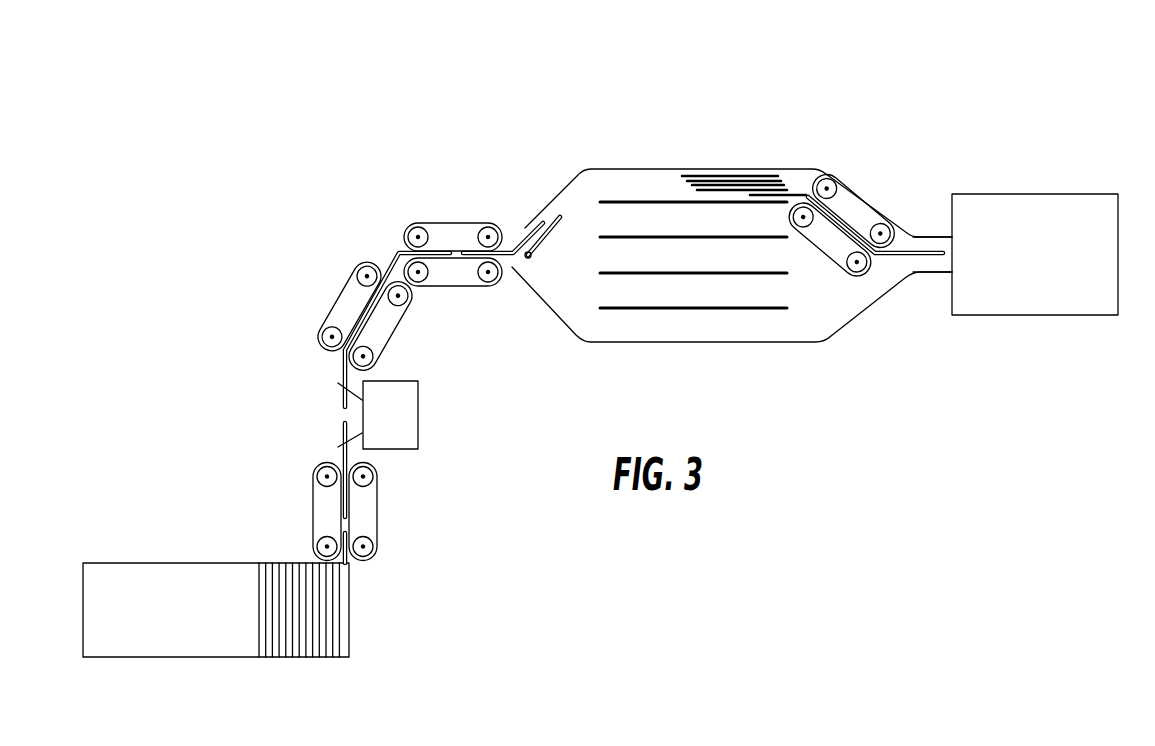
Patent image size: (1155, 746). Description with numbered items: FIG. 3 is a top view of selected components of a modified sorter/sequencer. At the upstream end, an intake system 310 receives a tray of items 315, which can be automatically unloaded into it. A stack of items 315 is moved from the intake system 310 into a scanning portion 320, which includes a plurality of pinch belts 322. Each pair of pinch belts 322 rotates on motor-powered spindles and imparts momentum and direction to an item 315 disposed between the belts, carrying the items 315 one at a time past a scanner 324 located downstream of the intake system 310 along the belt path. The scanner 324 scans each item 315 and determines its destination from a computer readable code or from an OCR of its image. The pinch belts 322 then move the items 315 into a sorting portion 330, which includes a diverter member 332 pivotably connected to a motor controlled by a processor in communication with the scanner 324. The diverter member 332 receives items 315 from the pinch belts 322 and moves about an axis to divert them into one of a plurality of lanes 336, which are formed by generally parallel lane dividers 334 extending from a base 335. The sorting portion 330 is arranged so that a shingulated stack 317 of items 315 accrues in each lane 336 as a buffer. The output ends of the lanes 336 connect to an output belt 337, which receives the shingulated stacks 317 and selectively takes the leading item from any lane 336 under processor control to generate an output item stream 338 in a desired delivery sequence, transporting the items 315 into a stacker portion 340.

The intake system 310 is at (132, 667).
The items 315 is at (290, 630).
The shingulated stack 317 is at (727, 178).
The scanning portion 320 is at (442, 435).
The pinch belts 322 is at (362, 262).
The scanner 324 is at (418, 403).
The sorting portion 330 is at (749, 207).
The diverter member 332 is at (547, 233).
The lane dividers 334 is at (708, 272).
The base 335 is at (823, 302).
The lanes 336 is at (675, 251).
The output belt 337 is at (852, 182).
The output item stream 338 is at (927, 223).
The stacker portion 340 is at (1057, 315).